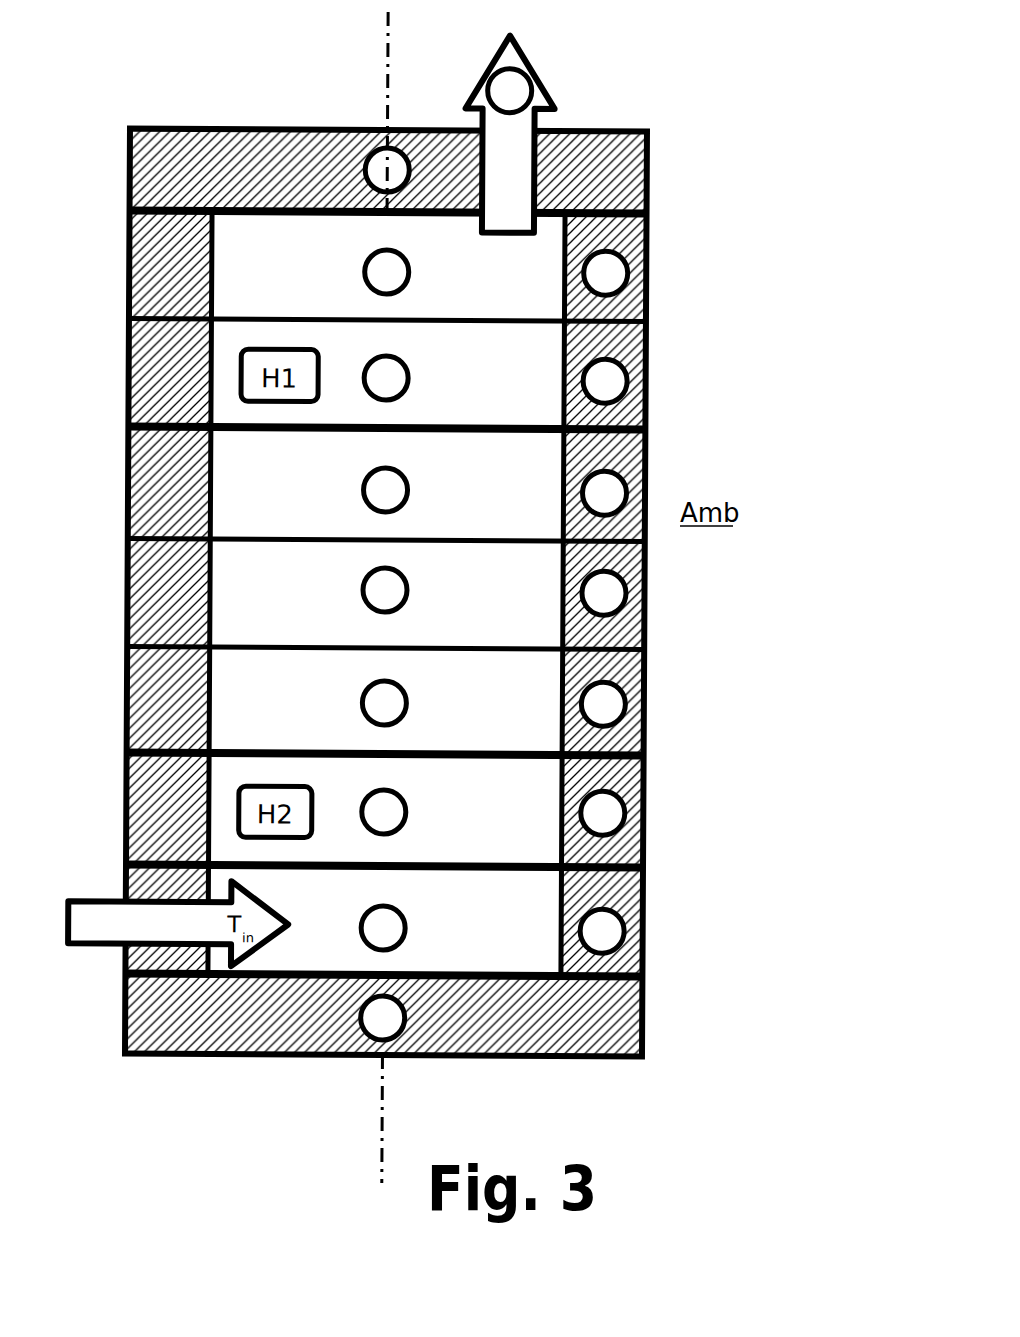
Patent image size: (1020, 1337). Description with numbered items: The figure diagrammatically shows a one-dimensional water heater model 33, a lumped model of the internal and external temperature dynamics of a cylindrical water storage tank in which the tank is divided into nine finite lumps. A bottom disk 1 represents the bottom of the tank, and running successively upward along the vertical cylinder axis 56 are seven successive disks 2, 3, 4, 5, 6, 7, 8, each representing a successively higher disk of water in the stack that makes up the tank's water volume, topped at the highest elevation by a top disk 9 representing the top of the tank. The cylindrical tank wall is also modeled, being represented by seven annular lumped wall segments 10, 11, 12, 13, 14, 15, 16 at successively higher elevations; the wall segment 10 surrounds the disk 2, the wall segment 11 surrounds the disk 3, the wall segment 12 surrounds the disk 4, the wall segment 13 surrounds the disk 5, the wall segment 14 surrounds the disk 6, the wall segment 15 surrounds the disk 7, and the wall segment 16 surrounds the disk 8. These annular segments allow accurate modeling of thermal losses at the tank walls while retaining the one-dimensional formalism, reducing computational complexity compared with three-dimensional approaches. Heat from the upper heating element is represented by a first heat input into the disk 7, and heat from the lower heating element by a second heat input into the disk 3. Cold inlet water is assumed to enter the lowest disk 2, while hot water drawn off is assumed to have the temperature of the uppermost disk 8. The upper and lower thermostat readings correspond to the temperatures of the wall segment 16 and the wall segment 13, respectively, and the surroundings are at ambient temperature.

The vertical cylinder axis 56 is at (392, 42).
The 1D water heater model 33 is at (755, 348).
The bottom disk 1 is at (383, 1018).
The disk 2 is at (383, 928).
The disk 3 is at (384, 812).
The disk 4 is at (384, 703).
The disk 5 is at (385, 590).
The disk 6 is at (385, 490).
The disk 7 is at (386, 378).
The disk 8 is at (448, 181).
The top disk 9 is at (387, 170).
The lumped wall segment 10 is at (602, 931).
The lumped wall segment 11 is at (603, 813).
The lumped wall segment 12 is at (603, 704).
The lumped wall segment 13 is at (604, 593).
The lumped wall segment 14 is at (604, 493).
The lumped wall segment 15 is at (605, 381).
The lumped wall segment 16 is at (606, 273).